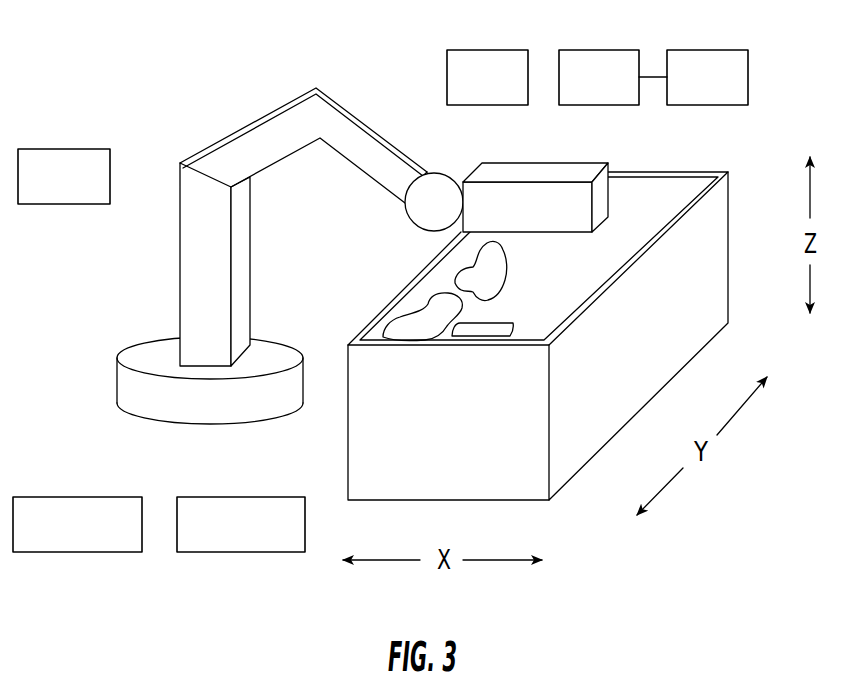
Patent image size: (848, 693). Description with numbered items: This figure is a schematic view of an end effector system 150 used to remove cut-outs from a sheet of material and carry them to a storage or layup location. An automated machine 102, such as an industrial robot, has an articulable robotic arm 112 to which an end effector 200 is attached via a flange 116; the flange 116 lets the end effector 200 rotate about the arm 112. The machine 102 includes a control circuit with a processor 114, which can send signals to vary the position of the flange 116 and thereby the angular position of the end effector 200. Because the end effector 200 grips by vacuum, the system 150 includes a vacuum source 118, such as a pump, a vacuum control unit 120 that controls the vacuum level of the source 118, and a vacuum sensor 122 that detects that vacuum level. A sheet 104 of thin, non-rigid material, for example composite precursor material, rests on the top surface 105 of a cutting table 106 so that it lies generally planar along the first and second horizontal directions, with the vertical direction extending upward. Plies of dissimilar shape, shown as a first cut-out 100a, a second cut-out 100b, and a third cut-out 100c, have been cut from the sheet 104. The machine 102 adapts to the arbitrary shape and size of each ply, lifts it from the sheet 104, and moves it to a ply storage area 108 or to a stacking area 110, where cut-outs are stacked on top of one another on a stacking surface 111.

The end effector system 150 is at (183, 77).
The automated machine 102 is at (91, 253).
The robotic arm 112 is at (355, 138).
The flange 116 is at (439, 190).
The processor 114 is at (180, 317).
The vacuum sensor 122 is at (513, 168).
The vacuum source 118 is at (595, 168).
The vacuum control unit 120 is at (724, 87).
The sheet of material 104 is at (627, 185).
The top surface of the table 105 is at (683, 204).
The cutting table 106 is at (713, 272).
The end effector 200 is at (548, 168).
The first cut-out 100a is at (413, 330).
The second cut-out 100b is at (490, 330).
The third cut-out 100c is at (473, 278).
The stacking surface 111 is at (268, 495).
The ply storage area 108 is at (94, 538).
The stacking area 110 is at (257, 538).